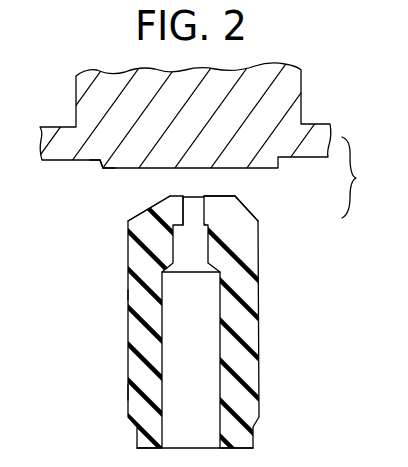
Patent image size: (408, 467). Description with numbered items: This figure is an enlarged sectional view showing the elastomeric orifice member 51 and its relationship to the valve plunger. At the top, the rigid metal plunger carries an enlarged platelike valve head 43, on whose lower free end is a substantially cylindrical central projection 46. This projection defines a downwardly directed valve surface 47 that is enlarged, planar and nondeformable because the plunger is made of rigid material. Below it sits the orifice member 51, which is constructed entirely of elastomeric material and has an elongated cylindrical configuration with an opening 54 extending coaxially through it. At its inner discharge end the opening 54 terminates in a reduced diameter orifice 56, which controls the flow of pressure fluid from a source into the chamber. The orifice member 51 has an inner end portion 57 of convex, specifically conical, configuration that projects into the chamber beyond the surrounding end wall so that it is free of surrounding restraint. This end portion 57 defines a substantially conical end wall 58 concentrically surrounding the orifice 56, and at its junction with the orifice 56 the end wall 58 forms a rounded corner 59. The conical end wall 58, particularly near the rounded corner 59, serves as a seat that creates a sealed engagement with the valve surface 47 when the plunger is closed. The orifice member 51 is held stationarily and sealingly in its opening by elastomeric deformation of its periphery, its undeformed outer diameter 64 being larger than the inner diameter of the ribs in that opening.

The valve head 43 is at (102, 127).
The central projection 46 is at (110, 163).
The valve surface 47 is at (108, 168).
The orifice member 51 is at (128, 333).
The opening 54 is at (140, 392).
The orifice 56 is at (183, 208).
The inner end portion 57 is at (140, 214).
The conical end wall 58 is at (228, 207).
The rounded corner 59 is at (207, 198).
The outer diameter 64 is at (128, 297).